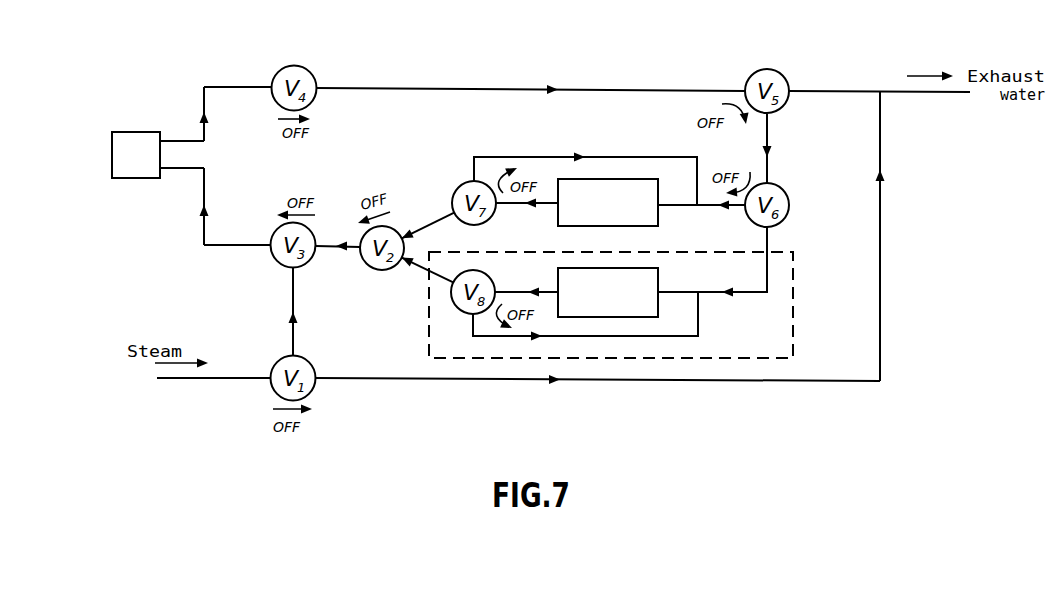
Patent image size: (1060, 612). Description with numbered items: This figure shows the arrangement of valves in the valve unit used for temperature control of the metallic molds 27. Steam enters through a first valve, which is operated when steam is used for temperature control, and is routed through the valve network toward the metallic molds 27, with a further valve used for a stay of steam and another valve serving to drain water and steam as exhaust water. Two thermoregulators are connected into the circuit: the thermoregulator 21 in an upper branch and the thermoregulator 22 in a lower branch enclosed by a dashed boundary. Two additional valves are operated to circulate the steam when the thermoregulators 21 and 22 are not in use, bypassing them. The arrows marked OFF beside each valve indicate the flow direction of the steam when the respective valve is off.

The metallic mold 27 is at (124, 132).
The thermoregulator 21 is at (658, 218).
The thermoregulator 22 is at (658, 276).